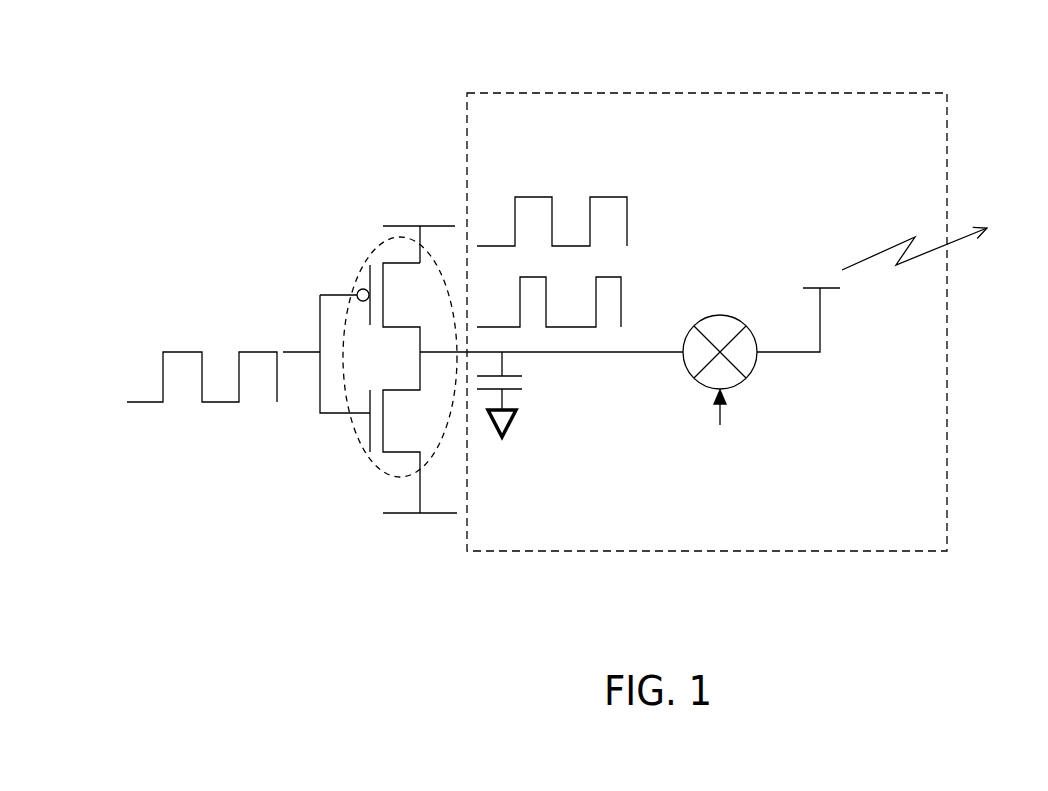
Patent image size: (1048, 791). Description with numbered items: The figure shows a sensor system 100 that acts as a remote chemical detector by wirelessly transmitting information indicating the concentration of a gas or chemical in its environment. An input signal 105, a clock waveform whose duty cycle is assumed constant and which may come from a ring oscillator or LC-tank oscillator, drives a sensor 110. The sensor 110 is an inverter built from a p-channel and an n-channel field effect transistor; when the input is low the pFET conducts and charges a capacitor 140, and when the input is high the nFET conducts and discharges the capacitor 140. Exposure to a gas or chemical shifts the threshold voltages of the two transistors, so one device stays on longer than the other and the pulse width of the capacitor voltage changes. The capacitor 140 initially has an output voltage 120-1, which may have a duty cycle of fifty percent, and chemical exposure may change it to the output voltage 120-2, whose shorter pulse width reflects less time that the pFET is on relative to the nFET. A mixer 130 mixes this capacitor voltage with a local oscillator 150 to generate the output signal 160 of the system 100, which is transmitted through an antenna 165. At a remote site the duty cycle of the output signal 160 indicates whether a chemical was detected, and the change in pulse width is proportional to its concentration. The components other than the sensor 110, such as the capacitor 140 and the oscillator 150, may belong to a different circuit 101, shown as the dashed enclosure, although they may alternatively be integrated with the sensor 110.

The sensor system 100 is at (188, 112).
The different circuit 101 is at (889, 553).
The input signal 105 is at (163, 337).
The sensor 110 is at (345, 245).
The output voltage 120-1 is at (515, 183).
The output voltage 120-2 is at (633, 288).
The mixer 130 is at (773, 390).
The capacitor 140 is at (532, 422).
The local oscillator 150 is at (728, 451).
The output signal 160 is at (942, 239).
The antenna 165 is at (842, 302).